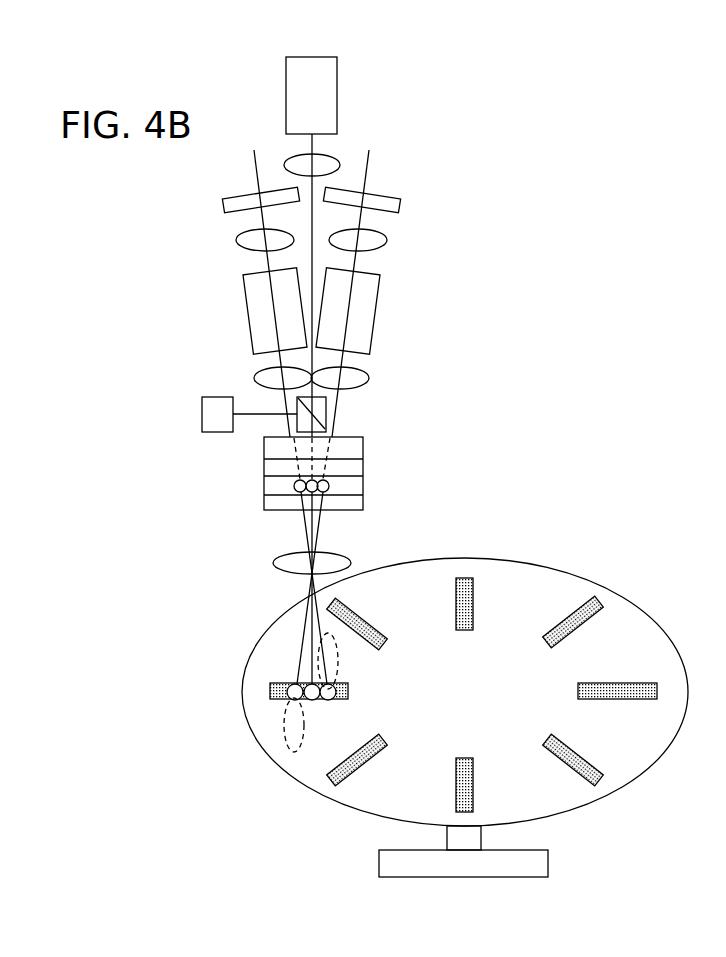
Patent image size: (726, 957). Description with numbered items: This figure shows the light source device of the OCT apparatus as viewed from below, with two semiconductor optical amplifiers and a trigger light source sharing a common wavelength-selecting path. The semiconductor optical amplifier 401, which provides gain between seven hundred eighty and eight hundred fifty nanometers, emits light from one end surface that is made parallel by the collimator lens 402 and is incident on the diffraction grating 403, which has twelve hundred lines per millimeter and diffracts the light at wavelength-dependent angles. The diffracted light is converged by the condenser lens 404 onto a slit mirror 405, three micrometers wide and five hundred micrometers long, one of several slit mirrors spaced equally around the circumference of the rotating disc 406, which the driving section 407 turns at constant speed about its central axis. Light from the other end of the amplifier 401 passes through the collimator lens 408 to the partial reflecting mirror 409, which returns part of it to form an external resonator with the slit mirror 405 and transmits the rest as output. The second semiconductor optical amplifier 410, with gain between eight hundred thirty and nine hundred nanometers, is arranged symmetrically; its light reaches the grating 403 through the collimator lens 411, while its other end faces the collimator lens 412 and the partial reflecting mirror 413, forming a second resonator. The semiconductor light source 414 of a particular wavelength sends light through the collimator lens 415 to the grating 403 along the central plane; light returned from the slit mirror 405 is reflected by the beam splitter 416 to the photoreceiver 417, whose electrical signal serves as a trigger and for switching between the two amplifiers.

The semiconductor optical amplifier 401 is at (378, 313).
The collimator lens 402 is at (370, 382).
The diffraction grating 403 is at (364, 503).
The condenser lens 404 is at (273, 563).
The slit mirror 405 is at (350, 690).
The rotating disc 406 is at (612, 797).
The driving section 407 is at (379, 858).
The collimator lens 408 is at (388, 241).
The partial reflecting mirror 409 is at (400, 205).
The semiconductor optical amplifier 410 is at (247, 310).
The collimator lens 411 is at (255, 382).
The collimator lens 412 is at (236, 240).
The partial reflecting mirror 413 is at (222, 201).
The semiconductor light source 414 is at (339, 81).
The collimator lens 415 is at (340, 165).
The beam splitter 416 is at (330, 408).
The photoreceiver 417 is at (202, 413).